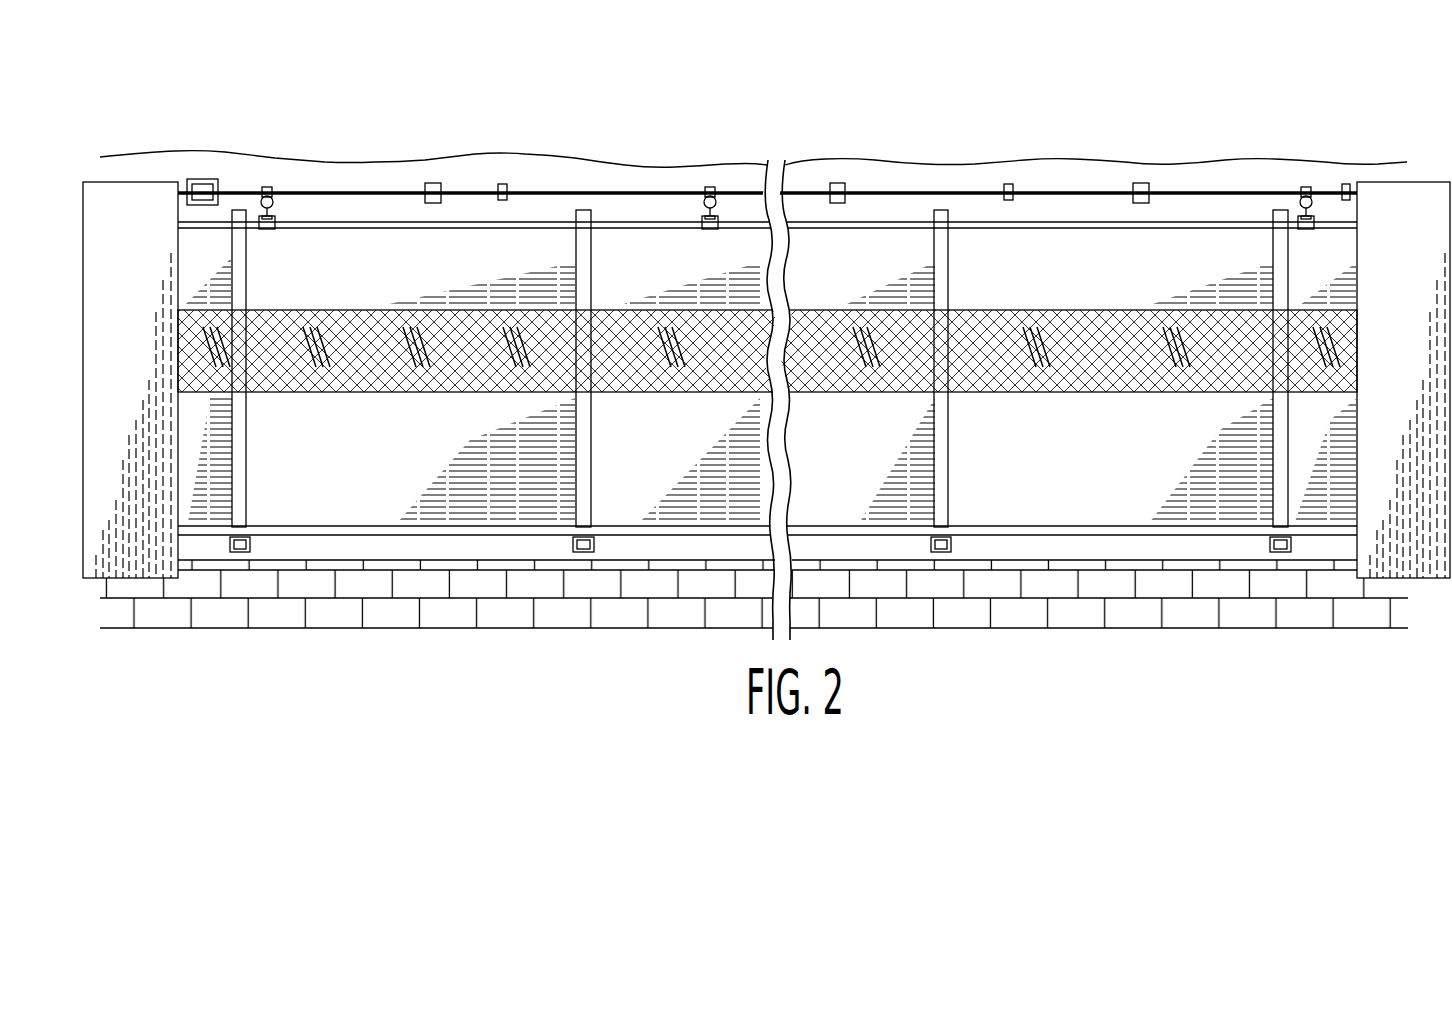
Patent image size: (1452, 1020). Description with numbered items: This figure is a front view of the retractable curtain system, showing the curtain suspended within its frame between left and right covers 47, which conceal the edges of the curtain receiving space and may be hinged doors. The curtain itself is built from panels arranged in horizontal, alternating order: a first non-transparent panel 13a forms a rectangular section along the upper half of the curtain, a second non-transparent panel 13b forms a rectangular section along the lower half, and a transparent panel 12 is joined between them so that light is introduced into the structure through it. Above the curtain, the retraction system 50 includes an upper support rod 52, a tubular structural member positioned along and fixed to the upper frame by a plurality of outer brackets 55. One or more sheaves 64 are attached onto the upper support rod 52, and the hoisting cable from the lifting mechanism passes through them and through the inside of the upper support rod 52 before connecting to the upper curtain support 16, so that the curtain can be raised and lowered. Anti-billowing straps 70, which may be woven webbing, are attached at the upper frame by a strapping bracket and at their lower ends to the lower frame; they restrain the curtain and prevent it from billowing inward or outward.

The transparent panel 12 is at (1200, 340).
The first non-transparent panel 13a is at (1080, 258).
The second non-transparent panel 13b is at (1073, 455).
The upper curtain support 16 is at (382, 222).
The covers 47 is at (1420, 225).
The retraction system 50 is at (572, 170).
The upper support rod 52 is at (638, 193).
The outer brackets 55 is at (432, 183).
The sheaves 64 is at (268, 196).
The anti-billowing straps 70 is at (598, 510).